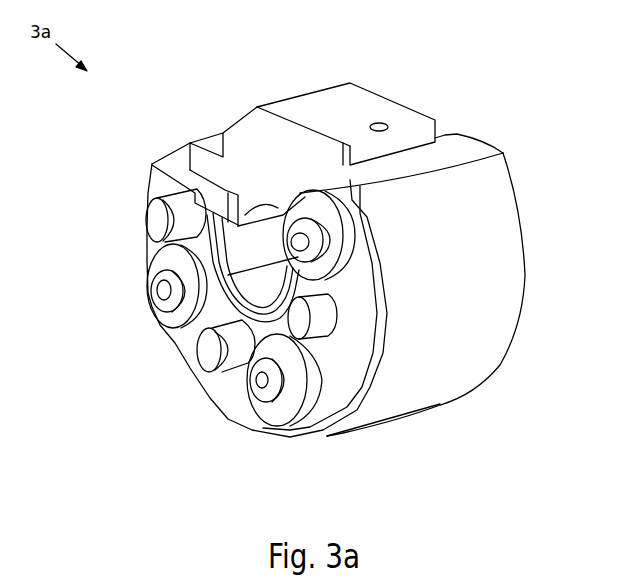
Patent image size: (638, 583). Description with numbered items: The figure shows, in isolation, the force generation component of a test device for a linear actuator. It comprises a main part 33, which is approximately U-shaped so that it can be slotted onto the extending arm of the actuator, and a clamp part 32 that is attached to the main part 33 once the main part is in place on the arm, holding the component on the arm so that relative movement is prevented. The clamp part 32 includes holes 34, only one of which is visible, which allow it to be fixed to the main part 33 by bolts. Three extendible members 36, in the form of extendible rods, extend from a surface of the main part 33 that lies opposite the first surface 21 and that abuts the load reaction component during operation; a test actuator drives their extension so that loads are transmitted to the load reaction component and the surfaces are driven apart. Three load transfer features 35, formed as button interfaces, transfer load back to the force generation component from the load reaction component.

The first surface 21 is at (525, 272).
The clamp part 32 is at (347, 103).
The main part 33 is at (480, 330).
The holes 34 is at (382, 124).
The load transfer features 35 is at (330, 250).
The extendible members 36 is at (155, 222).